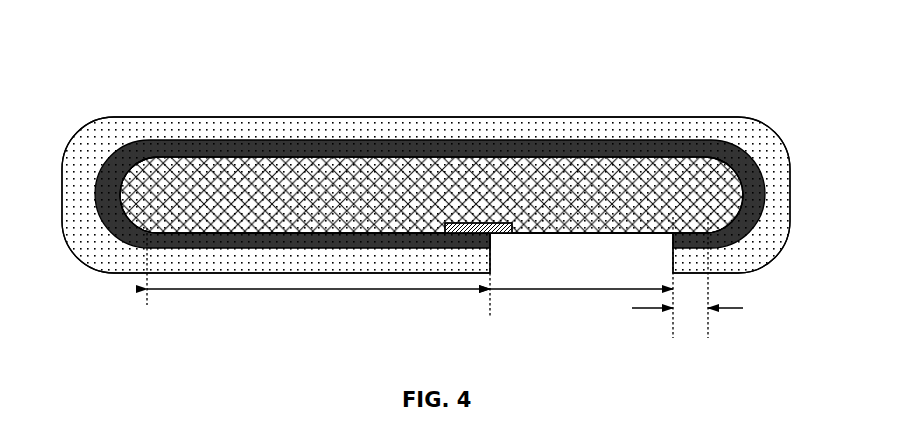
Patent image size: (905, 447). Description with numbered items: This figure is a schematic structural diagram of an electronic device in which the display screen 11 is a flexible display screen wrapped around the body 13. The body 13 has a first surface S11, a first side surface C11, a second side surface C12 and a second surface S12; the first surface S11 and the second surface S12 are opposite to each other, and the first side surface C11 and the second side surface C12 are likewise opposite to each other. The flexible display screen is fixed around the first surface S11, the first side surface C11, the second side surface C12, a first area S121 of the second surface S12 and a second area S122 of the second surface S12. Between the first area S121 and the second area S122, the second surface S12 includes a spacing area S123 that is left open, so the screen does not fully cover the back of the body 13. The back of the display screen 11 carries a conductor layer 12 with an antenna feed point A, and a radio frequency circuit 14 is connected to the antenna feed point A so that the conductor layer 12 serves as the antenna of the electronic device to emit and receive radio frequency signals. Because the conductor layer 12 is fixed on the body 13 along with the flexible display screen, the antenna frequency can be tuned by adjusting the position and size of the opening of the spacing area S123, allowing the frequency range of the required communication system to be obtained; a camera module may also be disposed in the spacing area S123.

The display screen 11 is at (275, 121).
The conductor layer 12 is at (318, 145).
The body 13 is at (383, 187).
The radio frequency circuit 14 is at (440, 222).
The antenna feed point A is at (485, 240).
The first surface S11 is at (540, 153).
The second surface S12 is at (228, 230).
The first side surface C11 is at (120, 190).
The second side surface C12 is at (743, 188).
The first area S121 is at (318, 275).
The second area S122 is at (687, 291).
The spacing area S123 is at (581, 277).